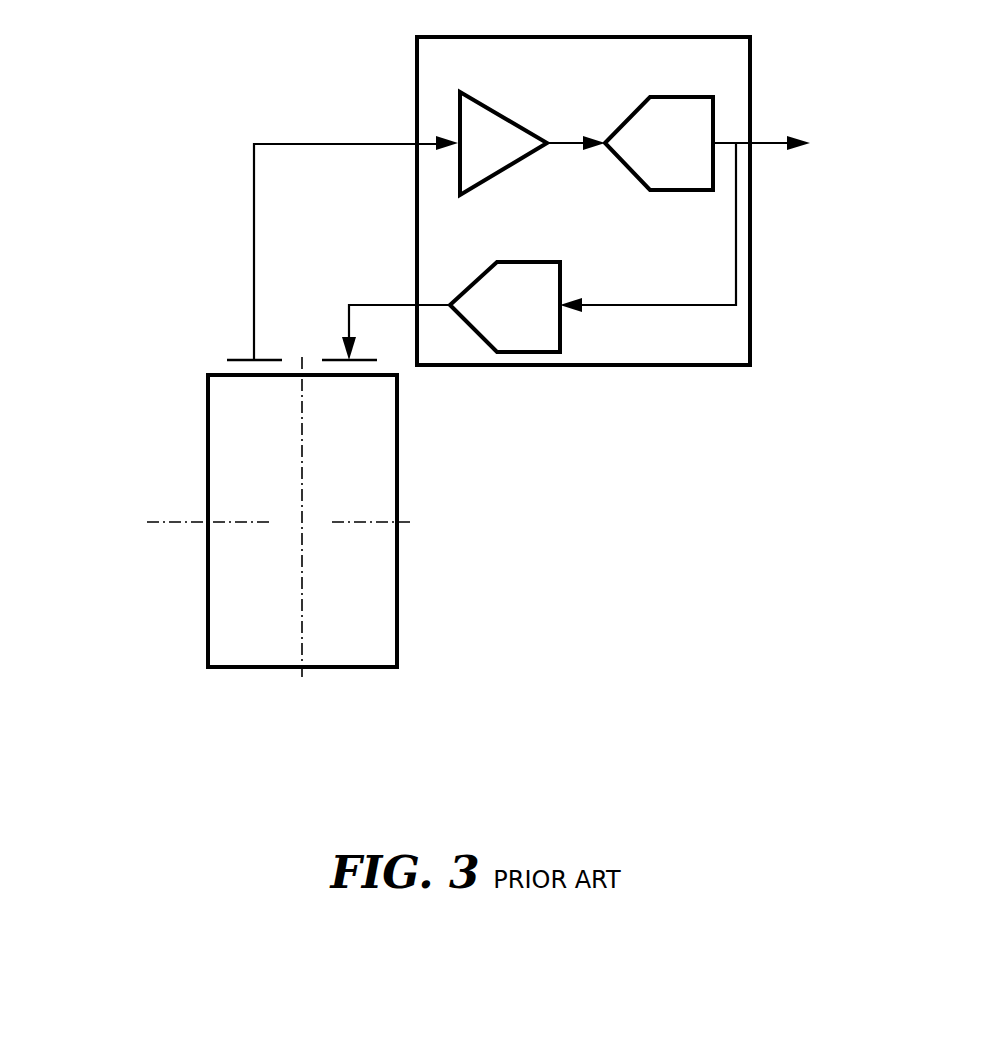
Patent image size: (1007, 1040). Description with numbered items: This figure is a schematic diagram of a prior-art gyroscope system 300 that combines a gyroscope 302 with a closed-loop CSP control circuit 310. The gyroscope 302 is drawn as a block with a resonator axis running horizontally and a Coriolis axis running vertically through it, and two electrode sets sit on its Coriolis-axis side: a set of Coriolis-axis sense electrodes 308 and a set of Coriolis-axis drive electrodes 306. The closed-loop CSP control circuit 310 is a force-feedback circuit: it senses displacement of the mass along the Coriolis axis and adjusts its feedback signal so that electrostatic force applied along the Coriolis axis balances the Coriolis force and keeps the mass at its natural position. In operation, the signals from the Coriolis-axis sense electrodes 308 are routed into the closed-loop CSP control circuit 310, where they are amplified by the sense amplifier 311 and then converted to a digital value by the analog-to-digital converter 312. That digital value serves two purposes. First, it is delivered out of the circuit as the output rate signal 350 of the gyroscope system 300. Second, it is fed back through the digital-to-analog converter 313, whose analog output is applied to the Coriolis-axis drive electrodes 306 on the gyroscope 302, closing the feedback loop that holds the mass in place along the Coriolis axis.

The gyroscope system 300 is at (415, 777).
The gyroscope 302 is at (336, 650).
The Coriolis-axis drive electrodes 306 is at (333, 358).
The Coriolis-axis sense electrodes 308 is at (240, 358).
The closed-loop CSP control circuit 310 is at (563, 74).
The sense amplifier 311 is at (507, 170).
The analog-to-digital converter (ADC) 312 is at (650, 169).
The digital-to-analog converter (DAC) 313 is at (497, 332).
The output rate signal 350 is at (785, 144).